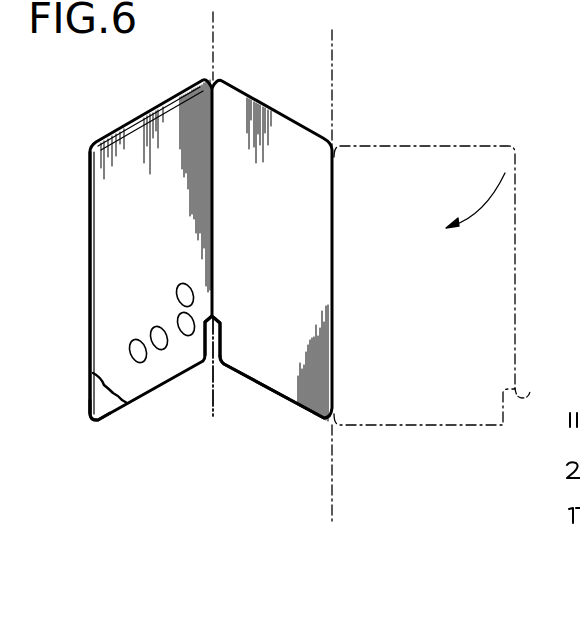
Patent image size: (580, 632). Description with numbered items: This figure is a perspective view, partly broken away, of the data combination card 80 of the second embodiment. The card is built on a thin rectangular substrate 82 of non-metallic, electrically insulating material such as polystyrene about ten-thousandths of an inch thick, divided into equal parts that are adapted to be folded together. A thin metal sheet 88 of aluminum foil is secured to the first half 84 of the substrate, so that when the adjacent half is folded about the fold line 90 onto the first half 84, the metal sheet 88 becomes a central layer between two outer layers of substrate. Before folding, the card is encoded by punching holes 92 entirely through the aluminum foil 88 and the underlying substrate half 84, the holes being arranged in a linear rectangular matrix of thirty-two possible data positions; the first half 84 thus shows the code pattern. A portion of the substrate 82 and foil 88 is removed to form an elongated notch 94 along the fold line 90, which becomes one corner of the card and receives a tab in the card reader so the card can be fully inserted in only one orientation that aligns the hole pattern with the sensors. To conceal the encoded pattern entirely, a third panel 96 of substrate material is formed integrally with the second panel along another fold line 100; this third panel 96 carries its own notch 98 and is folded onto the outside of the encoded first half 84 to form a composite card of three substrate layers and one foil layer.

The data combination card 80 is at (277, 103).
The substrate 82 is at (271, 391).
The first half of the substrate 84 is at (97, 410).
The metal sheet 88 is at (102, 238).
The fold line 90 is at (212, 395).
The holes 92 is at (135, 347).
The notch 94 is at (220, 337).
The third panel 96 is at (397, 425).
The notch 98 is at (529, 390).
The fold line 100 is at (334, 76).